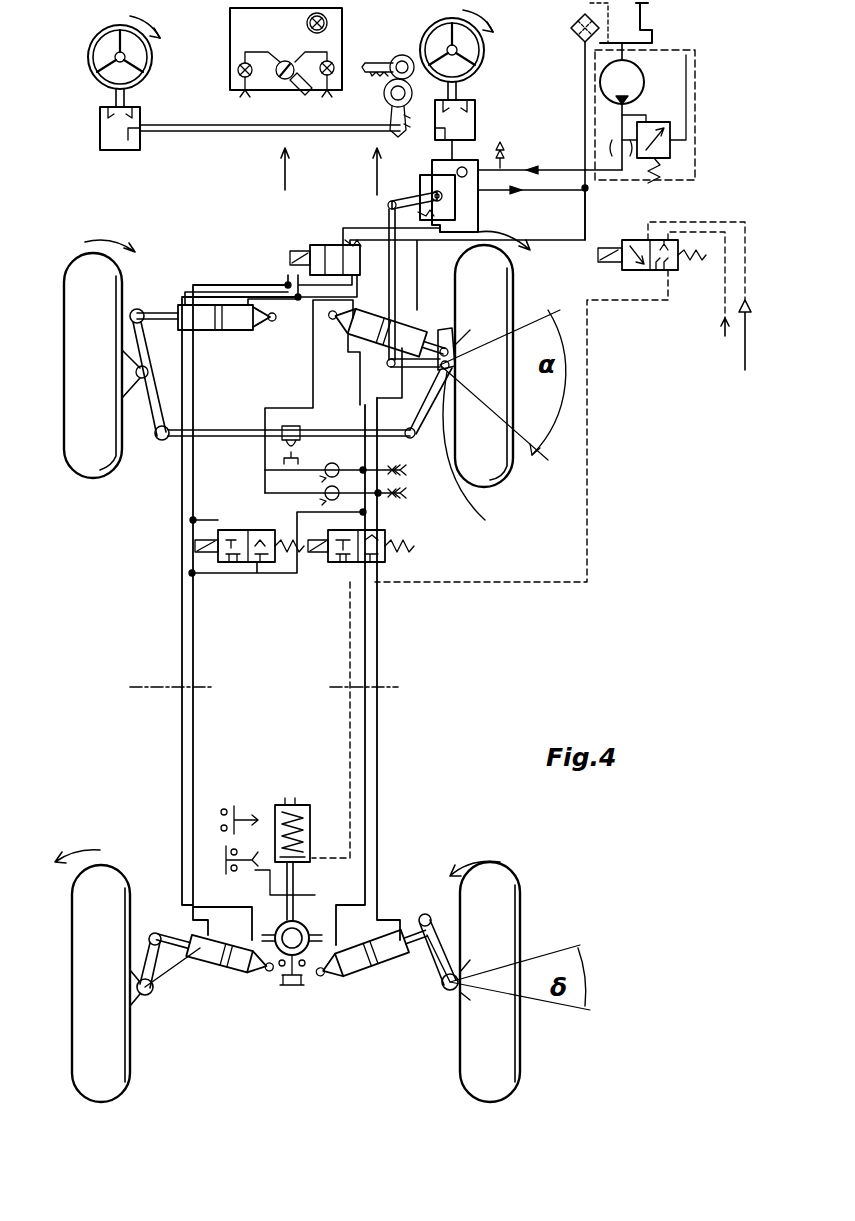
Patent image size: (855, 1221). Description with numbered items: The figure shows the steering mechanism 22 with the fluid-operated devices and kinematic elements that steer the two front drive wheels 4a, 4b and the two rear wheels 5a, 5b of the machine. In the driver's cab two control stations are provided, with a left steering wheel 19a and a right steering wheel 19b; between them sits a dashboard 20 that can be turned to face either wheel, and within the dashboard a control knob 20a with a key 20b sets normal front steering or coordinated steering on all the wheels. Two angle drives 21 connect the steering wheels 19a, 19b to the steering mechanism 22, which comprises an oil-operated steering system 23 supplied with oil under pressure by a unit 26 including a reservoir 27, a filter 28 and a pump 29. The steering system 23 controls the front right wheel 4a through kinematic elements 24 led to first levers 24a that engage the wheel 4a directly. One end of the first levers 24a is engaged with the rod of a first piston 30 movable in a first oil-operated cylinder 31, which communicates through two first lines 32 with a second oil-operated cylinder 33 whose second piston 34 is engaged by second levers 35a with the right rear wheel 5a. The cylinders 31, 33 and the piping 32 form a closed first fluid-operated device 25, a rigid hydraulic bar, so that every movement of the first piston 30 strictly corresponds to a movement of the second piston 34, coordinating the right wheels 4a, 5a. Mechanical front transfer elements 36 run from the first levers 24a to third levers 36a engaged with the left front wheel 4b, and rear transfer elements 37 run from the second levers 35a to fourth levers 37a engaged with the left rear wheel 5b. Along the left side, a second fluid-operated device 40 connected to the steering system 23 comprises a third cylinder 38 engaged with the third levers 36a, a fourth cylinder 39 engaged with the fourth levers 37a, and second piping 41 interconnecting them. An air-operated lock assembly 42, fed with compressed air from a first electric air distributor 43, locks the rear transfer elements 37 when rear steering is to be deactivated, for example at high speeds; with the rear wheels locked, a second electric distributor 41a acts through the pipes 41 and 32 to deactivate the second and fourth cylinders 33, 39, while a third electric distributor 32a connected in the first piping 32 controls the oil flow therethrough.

The left steering wheel 19a is at (98, 44).
The right steering wheel 19b is at (470, 72).
The dashboard 20 is at (250, 44).
The control knob 20a is at (290, 112).
The key 20b is at (374, 64).
The angle drives 21 is at (100, 137).
The steering mechanism 22 is at (190, 200).
The oil-operated steering system 23 is at (505, 208).
The kinematic elements 24 is at (388, 275).
The first levers 24a is at (486, 453).
The first fluid-operated device 25 is at (393, 708).
The supply unit 26 is at (680, 172).
The reservoir 27 is at (648, 34).
The filter 28 is at (632, 16).
The pump 29 is at (593, 96).
The first piston 30 is at (448, 326).
The first oil-operated cylinder 31 is at (352, 338).
The first lines 32 is at (387, 642).
The third electric distributor 32a is at (430, 557).
The second oil-operated cylinder 33 is at (312, 956).
The second piston 34 is at (384, 974).
The second levers 35a is at (440, 945).
The front transfer elements 36 is at (236, 437).
The third levers 36a is at (150, 435).
The rear transfer elements 37 is at (222, 928).
The fourth levers 37a is at (178, 998).
The third cylinder 38 is at (222, 335).
The fourth cylinder 39 is at (240, 965).
The second fluid-operated device 40 is at (170, 718).
The second piping 41 is at (262, 290).
The second electric distributor 41a is at (254, 588).
The lock assembly 42 is at (291, 790).
The first electric air distributor 43 is at (676, 288).
The front right wheel 4a is at (513, 465).
The front left wheel 4b is at (93, 482).
The rear right wheel 5a is at (522, 1050).
The rear left wheel 5b is at (135, 1042).